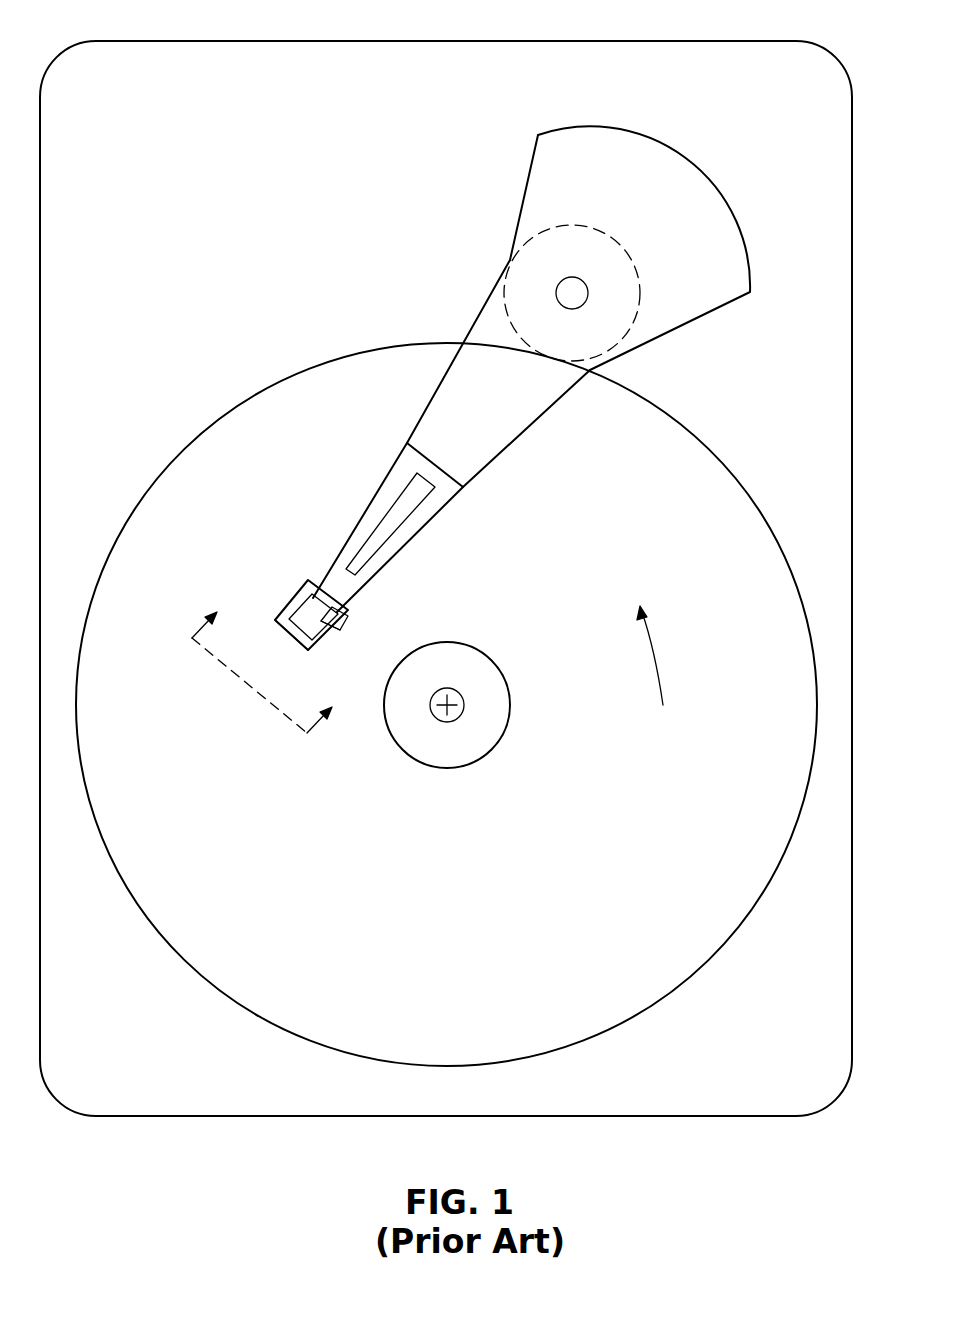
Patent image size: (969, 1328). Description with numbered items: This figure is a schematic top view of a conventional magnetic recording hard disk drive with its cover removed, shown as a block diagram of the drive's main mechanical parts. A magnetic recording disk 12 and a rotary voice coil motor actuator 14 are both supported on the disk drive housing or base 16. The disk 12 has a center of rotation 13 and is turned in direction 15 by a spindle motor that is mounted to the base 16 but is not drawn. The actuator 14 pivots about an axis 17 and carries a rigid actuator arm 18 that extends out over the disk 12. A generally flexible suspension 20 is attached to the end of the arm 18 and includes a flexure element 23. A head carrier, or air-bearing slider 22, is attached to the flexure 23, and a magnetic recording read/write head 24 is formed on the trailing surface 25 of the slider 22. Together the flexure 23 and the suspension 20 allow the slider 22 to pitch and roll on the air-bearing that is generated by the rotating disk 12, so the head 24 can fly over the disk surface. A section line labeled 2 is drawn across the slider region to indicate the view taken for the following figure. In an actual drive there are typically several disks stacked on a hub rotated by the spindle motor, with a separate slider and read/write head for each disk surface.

The magnetic recording disk 12 is at (457, 969).
The center of rotation 13 is at (463, 698).
The rotary voice coil motor (VCM) actuator 14 is at (683, 162).
The direction of rotation 15 is at (663, 670).
The disk drive housing or base 16 is at (722, 41).
The pivot axis 17 is at (556, 292).
The rigid actuator arm 18 is at (443, 392).
The suspension 20 is at (397, 480).
The air-bearing slider 22 is at (306, 588).
The flexure element 23 is at (340, 632).
The magnetic recording read/write head 24 is at (316, 650).
The trailing surface 25 is at (281, 627).
The section line 2- 2 is at (272, 659).